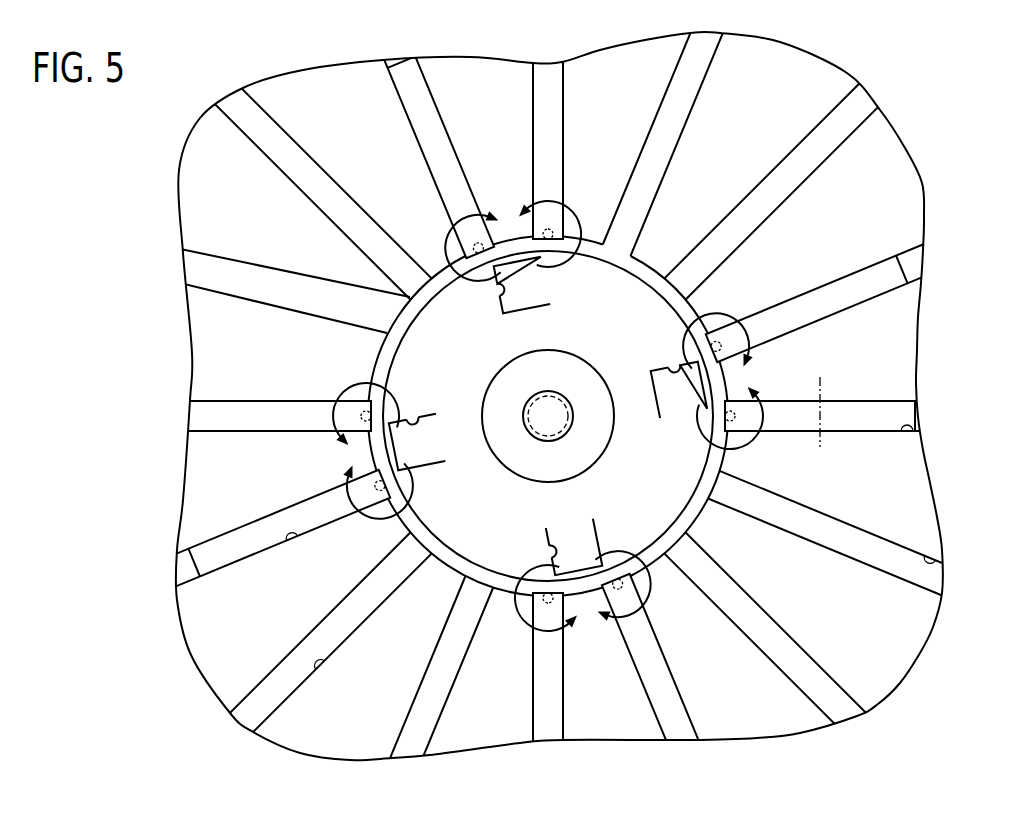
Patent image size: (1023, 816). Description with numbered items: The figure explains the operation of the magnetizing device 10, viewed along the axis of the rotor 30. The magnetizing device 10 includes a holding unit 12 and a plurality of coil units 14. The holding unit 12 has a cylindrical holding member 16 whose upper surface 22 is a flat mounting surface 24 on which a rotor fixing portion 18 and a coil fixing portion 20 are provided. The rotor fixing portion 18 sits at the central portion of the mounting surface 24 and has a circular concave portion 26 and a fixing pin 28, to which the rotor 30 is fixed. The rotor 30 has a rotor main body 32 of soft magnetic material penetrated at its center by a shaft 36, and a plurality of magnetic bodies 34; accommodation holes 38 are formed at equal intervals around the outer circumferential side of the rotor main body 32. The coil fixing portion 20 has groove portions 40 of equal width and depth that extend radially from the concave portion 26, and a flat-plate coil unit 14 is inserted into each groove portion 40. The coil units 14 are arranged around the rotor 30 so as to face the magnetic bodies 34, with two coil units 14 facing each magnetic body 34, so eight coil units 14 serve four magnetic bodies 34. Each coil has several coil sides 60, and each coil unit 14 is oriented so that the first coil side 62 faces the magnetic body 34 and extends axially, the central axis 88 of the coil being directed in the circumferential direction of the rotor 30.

The magnetizing device 10 is at (80, 163).
The holding unit 12 is at (541, 408).
The coil unit 14 is at (428, 125).
The holding member 16 is at (843, 72).
The rotor fixing portion 18 is at (791, 659).
The coil fixing portion 20 is at (840, 395).
The upper surface 22 is at (865, 548).
The mounting surface 24 is at (865, 548).
The concave portion 26 is at (235, 280).
The fixing pin 28 is at (552, 407).
The rotor 30 is at (665, 289).
The rotor main body 32 is at (680, 128).
The magnetic body 34 is at (514, 308).
The shaft 36 is at (532, 438).
The accommodation hole 38 is at (503, 288).
The groove portion 40 is at (289, 538).
The coil side 60 is at (362, 405).
The first coil side 62 is at (509, 453).
The central axis 88 is at (824, 427).